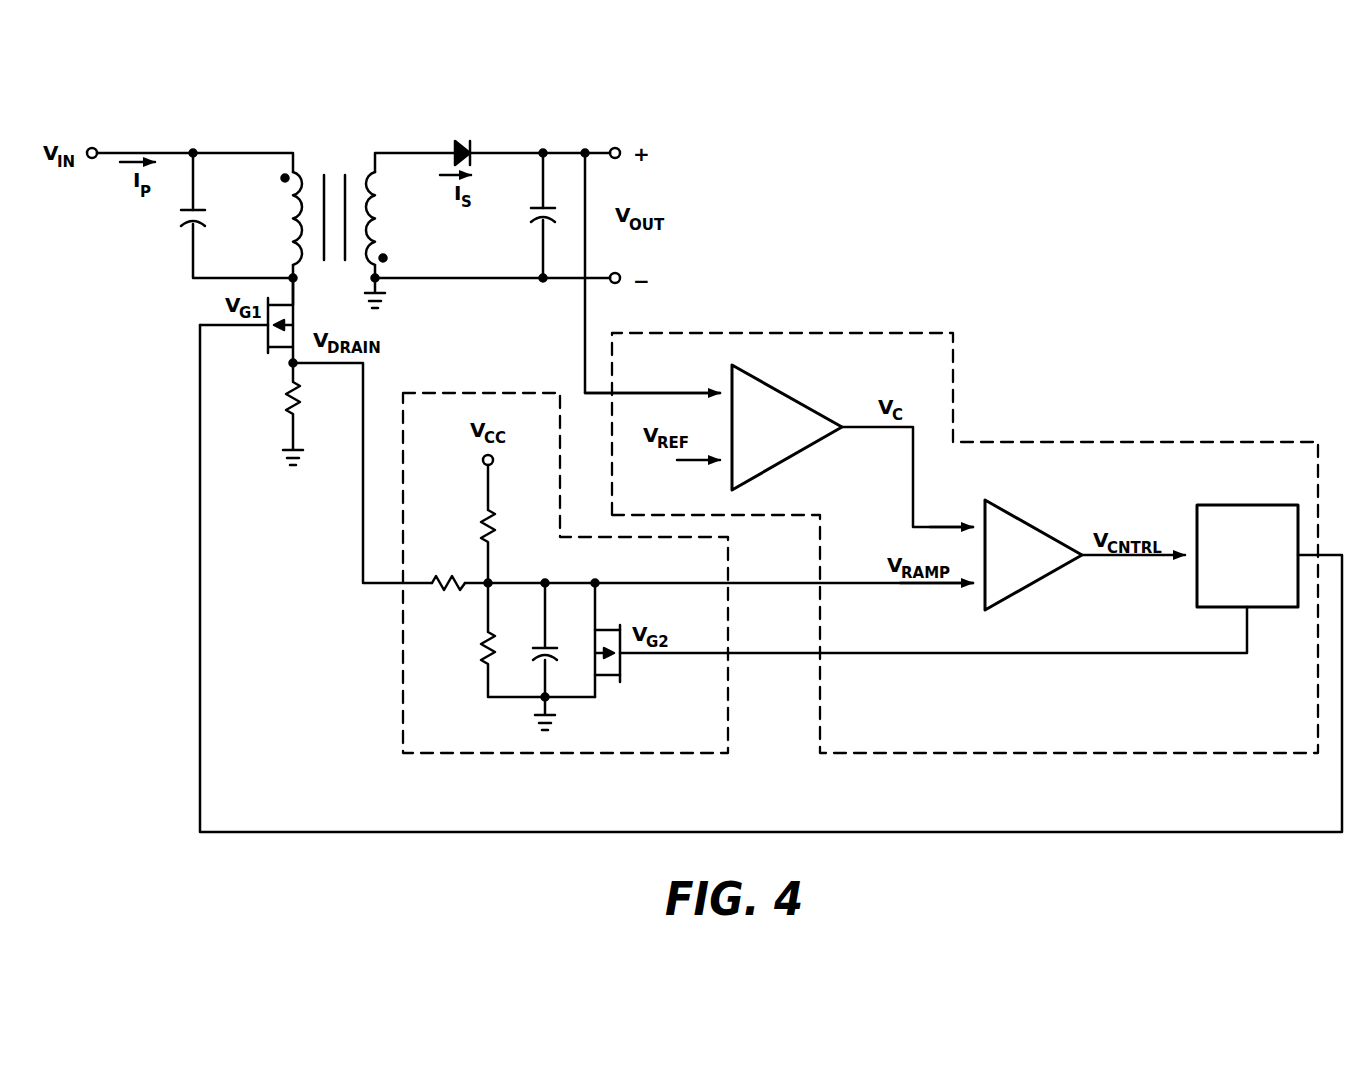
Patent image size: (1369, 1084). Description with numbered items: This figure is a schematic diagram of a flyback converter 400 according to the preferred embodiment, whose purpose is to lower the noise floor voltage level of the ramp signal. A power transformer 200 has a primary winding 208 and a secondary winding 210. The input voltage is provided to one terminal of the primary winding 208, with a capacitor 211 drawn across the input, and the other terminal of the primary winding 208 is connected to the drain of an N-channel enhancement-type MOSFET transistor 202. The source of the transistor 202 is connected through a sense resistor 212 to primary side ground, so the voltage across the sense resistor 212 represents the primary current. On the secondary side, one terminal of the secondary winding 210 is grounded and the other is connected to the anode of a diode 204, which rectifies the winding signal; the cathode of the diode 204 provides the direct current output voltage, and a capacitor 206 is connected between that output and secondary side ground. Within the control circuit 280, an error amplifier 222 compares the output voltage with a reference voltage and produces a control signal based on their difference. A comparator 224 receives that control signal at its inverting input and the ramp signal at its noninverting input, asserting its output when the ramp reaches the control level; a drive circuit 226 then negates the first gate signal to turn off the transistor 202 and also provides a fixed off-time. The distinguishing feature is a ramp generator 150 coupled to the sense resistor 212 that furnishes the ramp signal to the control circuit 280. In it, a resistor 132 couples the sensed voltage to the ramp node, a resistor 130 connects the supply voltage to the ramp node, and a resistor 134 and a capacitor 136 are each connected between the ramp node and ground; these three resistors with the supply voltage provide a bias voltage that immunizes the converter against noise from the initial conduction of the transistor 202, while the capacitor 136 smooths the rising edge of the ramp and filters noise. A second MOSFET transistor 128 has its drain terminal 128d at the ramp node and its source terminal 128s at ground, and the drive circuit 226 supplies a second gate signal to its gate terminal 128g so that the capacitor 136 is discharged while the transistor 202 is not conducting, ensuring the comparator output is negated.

The flyback converter 400 is at (1232, 262).
The power transformer 200 is at (333, 180).
The primary winding 208 is at (297, 228).
The secondary winding 210 is at (375, 227).
The input capacitor 211 is at (187, 215).
The diode 204 is at (463, 140).
The capacitor 206 is at (540, 208).
The transistor 202 is at (262, 333).
The sense resistor 212 is at (283, 395).
The error amplifier 222 is at (790, 395).
The comparator 224 is at (1017, 518).
The drive circuit 226 is at (1217, 505).
The control circuit 280 is at (1083, 442).
The ramp generator 150 is at (549, 753).
The resistor 130 is at (475, 530).
The resistor 132 is at (448, 578).
The resistor 134 is at (483, 637).
The capacitor 136 is at (543, 643).
The transistor 128 is at (921, 657).
The drain terminal 128d is at (598, 612).
The source terminal 128s is at (598, 688).
The gate terminal 128g is at (763, 655).